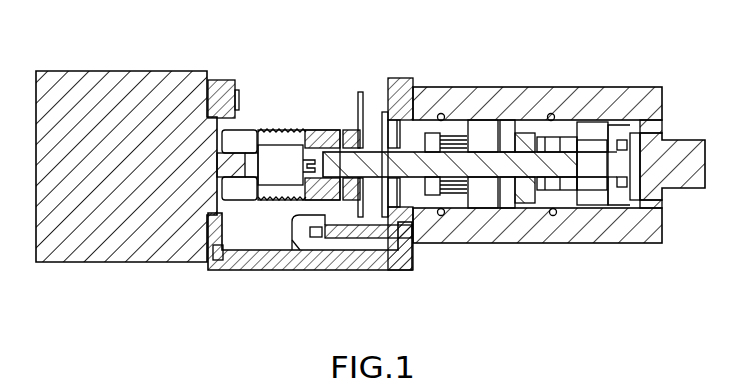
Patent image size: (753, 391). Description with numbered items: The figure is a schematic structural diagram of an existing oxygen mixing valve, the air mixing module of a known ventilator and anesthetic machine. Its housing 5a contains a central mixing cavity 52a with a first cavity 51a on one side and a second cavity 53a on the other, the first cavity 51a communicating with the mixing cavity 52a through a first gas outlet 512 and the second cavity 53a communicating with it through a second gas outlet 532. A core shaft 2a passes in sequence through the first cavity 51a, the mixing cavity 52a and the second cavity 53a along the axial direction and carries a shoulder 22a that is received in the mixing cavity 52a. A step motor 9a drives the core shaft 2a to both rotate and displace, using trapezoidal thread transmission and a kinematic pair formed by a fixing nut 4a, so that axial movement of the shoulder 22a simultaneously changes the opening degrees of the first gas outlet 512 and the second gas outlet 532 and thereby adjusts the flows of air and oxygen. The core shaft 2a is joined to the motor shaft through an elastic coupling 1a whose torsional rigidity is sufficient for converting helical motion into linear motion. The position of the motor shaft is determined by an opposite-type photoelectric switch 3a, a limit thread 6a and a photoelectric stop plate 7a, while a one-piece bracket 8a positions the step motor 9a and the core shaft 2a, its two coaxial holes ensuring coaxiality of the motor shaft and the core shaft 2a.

The elastic coupling 1a is at (248, 137).
The core shaft 2a is at (353, 137).
The opposite-type photoelectric switch 3a is at (382, 112).
The fixing nut 4a is at (462, 190).
The housing 5a is at (537, 232).
The limit thread 6a is at (403, 237).
The photoelectric stop plate 7a is at (360, 195).
The one-piece bracket 8a is at (302, 235).
The step motor 9a is at (178, 245).
The shoulder 22a is at (518, 165).
The first cavity 51a is at (487, 138).
The first gas outlet 512 is at (510, 140).
The mixing cavity 52a is at (528, 127).
The second gas outlet 532 is at (560, 140).
The second cavity 53a is at (595, 140).